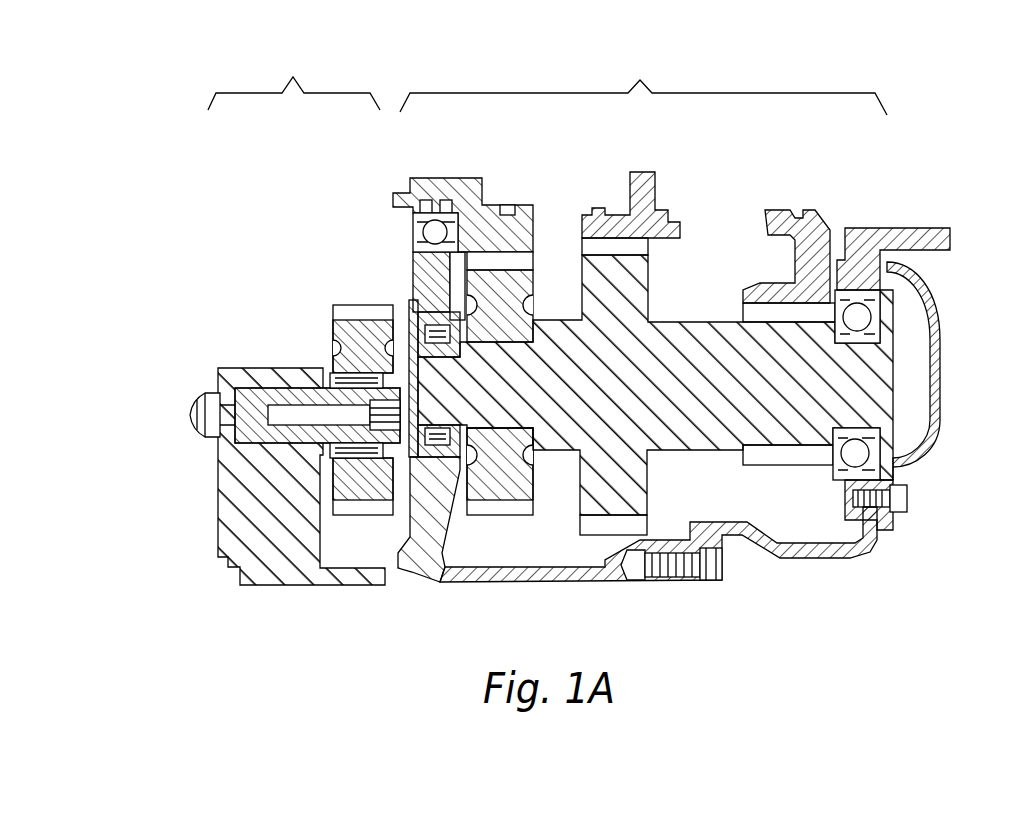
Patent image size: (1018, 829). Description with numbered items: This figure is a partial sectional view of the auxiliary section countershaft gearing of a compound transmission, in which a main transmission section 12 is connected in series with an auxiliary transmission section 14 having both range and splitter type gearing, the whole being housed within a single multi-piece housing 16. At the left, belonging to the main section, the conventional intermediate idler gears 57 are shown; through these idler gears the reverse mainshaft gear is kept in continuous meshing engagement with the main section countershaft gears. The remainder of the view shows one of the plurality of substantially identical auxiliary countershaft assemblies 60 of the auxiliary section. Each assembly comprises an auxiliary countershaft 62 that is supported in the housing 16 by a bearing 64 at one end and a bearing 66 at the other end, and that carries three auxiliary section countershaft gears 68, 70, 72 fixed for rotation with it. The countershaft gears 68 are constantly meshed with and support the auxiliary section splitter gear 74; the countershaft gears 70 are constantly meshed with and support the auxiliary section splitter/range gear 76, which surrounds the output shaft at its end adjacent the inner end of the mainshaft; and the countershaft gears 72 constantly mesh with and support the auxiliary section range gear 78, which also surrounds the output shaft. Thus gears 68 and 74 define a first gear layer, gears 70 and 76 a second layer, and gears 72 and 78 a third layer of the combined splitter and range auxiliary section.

The main transmission section 12 is at (294, 78).
The auxiliary transmission section 14 is at (997, 180).
The housing 16 is at (235, 520).
The intermediate idler gears 57 is at (370, 495).
The auxiliary countershaft assembly 60 is at (692, 240).
The auxiliary countershaft 62 is at (703, 430).
The bearing 64 is at (413, 313).
The bearing 66 is at (885, 305).
The auxiliary section countershaft gear 68 is at (500, 487).
The auxiliary section countershaft gear 70 is at (622, 478).
The auxiliary section countershaft gear 72 is at (786, 455).
The auxiliary section splitter gear 74 is at (536, 228).
The auxiliary section splitter/range gear 76 is at (582, 222).
The auxiliary section range gear 78 is at (800, 245).